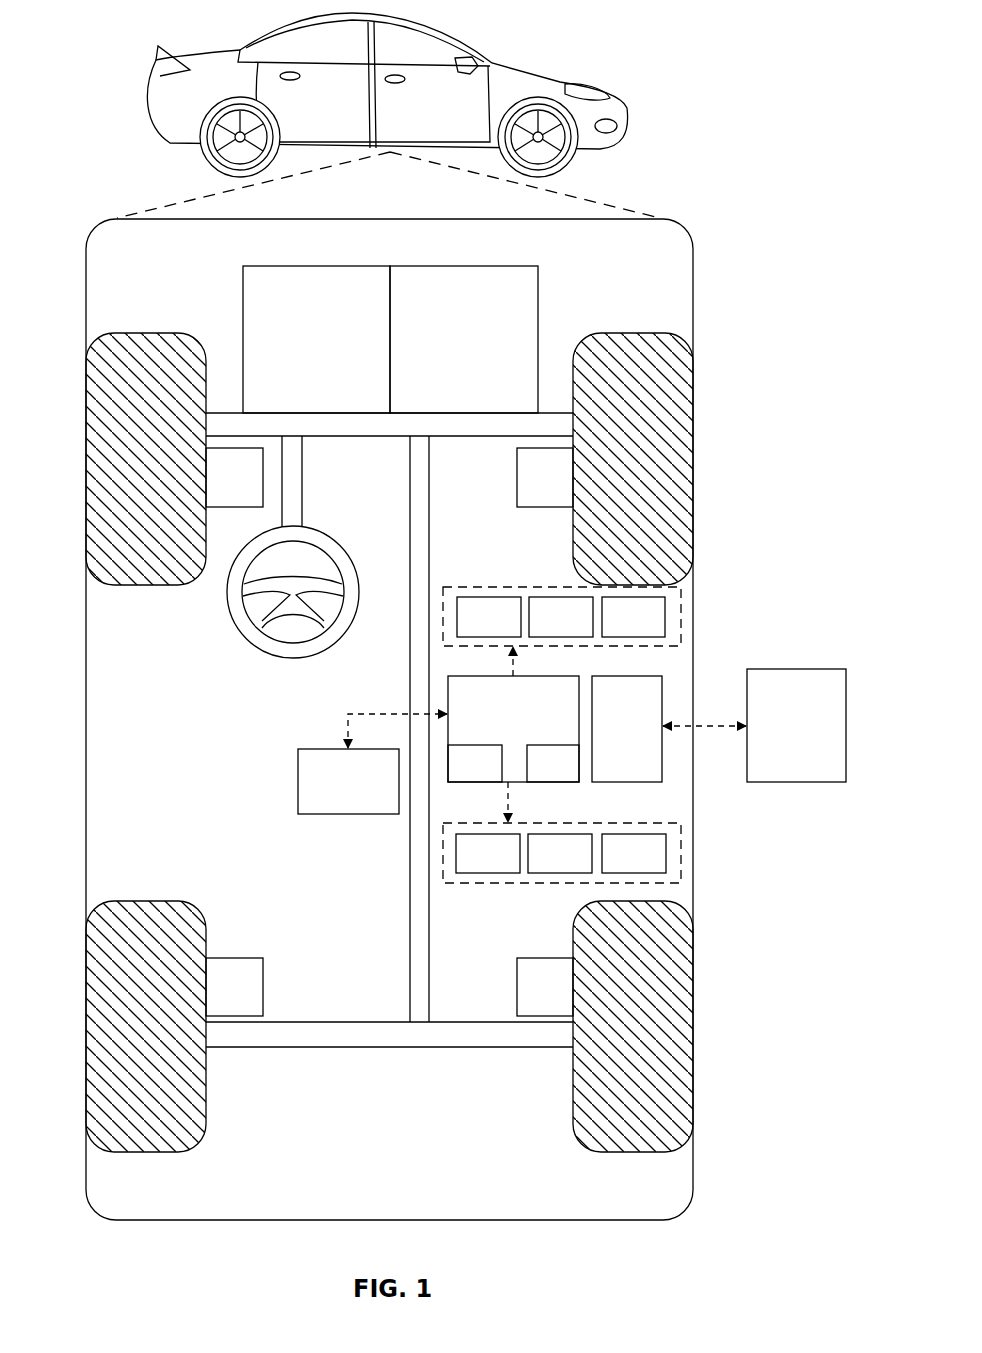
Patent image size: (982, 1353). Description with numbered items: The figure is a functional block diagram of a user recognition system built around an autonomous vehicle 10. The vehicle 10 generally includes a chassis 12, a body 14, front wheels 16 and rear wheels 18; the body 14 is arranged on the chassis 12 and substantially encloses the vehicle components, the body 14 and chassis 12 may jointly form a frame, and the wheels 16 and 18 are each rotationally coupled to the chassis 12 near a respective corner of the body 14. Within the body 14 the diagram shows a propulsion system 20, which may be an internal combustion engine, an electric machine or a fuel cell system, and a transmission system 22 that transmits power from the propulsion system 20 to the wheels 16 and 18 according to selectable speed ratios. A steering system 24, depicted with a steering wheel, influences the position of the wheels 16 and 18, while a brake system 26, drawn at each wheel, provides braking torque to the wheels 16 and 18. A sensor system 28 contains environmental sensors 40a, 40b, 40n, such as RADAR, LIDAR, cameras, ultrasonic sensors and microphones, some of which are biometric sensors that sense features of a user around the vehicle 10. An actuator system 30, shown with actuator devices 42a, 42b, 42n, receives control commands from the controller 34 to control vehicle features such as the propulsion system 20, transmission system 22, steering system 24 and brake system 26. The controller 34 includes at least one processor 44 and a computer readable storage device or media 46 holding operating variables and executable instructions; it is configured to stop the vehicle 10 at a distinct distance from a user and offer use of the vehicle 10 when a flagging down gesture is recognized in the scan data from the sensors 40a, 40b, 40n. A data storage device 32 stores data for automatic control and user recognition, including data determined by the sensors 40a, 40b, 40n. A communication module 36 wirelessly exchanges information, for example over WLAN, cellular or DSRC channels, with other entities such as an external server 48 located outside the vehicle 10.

The autonomous vehicle 10 is at (152, 108).
The chassis 12 is at (410, 935).
The body 14 is at (86, 680).
The front wheels 16 is at (150, 333).
The rear wheels 18 is at (150, 1152).
The propulsion system 20 is at (303, 351).
The transmission system 22 is at (449, 351).
The steering system 24 is at (312, 505).
The brake system 26 is at (221, 490).
The sensor system 28 is at (562, 602).
The actuator system 30 is at (562, 874).
The data storage device 32 is at (334, 794).
The controller 34 is at (463, 734).
The communication module 36 is at (613, 741).
The environmental sensor 40a is at (468, 629).
The environmental sensor 40b is at (540, 629).
The environmental sensor 40n is at (612, 629).
The scanning sensors 42a is at (467, 865).
The voice recognition sensor 42b is at (539, 865).
The processor 42n is at (613, 865).
The processor 44 is at (461, 776).
The computer readable storage device or media 46 is at (539, 776).
The external server 48 is at (783, 737).